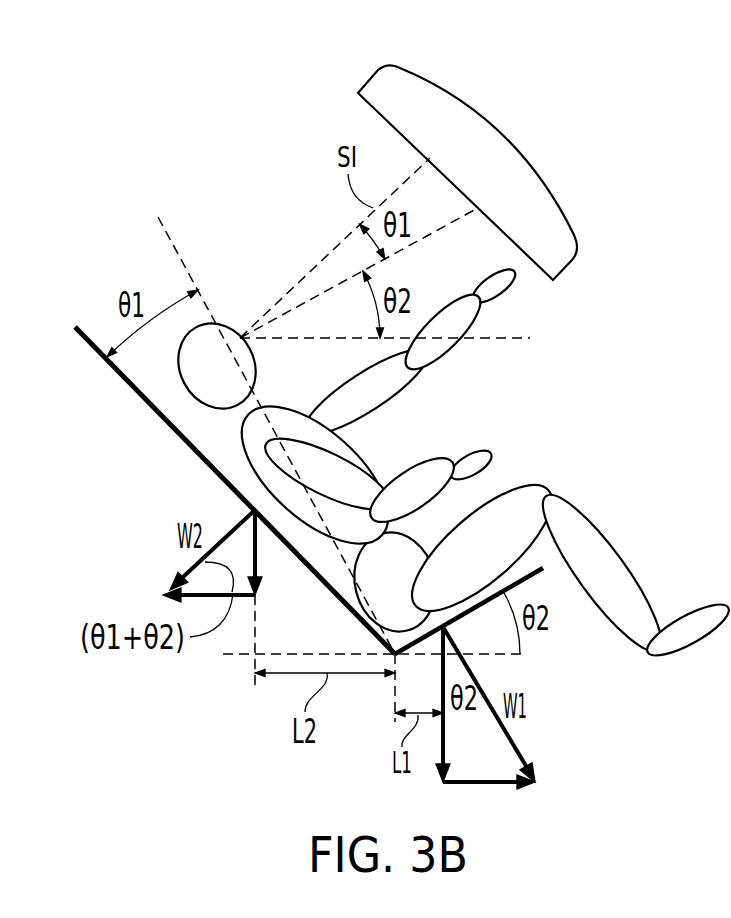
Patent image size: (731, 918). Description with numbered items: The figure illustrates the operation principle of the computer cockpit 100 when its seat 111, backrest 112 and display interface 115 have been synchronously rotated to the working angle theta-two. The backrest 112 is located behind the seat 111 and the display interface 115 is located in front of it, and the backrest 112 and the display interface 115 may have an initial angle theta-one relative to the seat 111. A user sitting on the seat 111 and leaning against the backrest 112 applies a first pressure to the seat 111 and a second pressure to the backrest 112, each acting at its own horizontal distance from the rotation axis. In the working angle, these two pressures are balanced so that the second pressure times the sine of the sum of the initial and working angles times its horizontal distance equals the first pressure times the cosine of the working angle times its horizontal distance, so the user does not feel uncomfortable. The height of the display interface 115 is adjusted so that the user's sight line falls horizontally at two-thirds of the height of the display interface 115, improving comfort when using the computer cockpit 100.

The computer cockpit 100 is at (118, 116).
The seat 111 is at (543, 572).
The backrest 112 is at (160, 419).
The display interface 115 is at (473, 128).